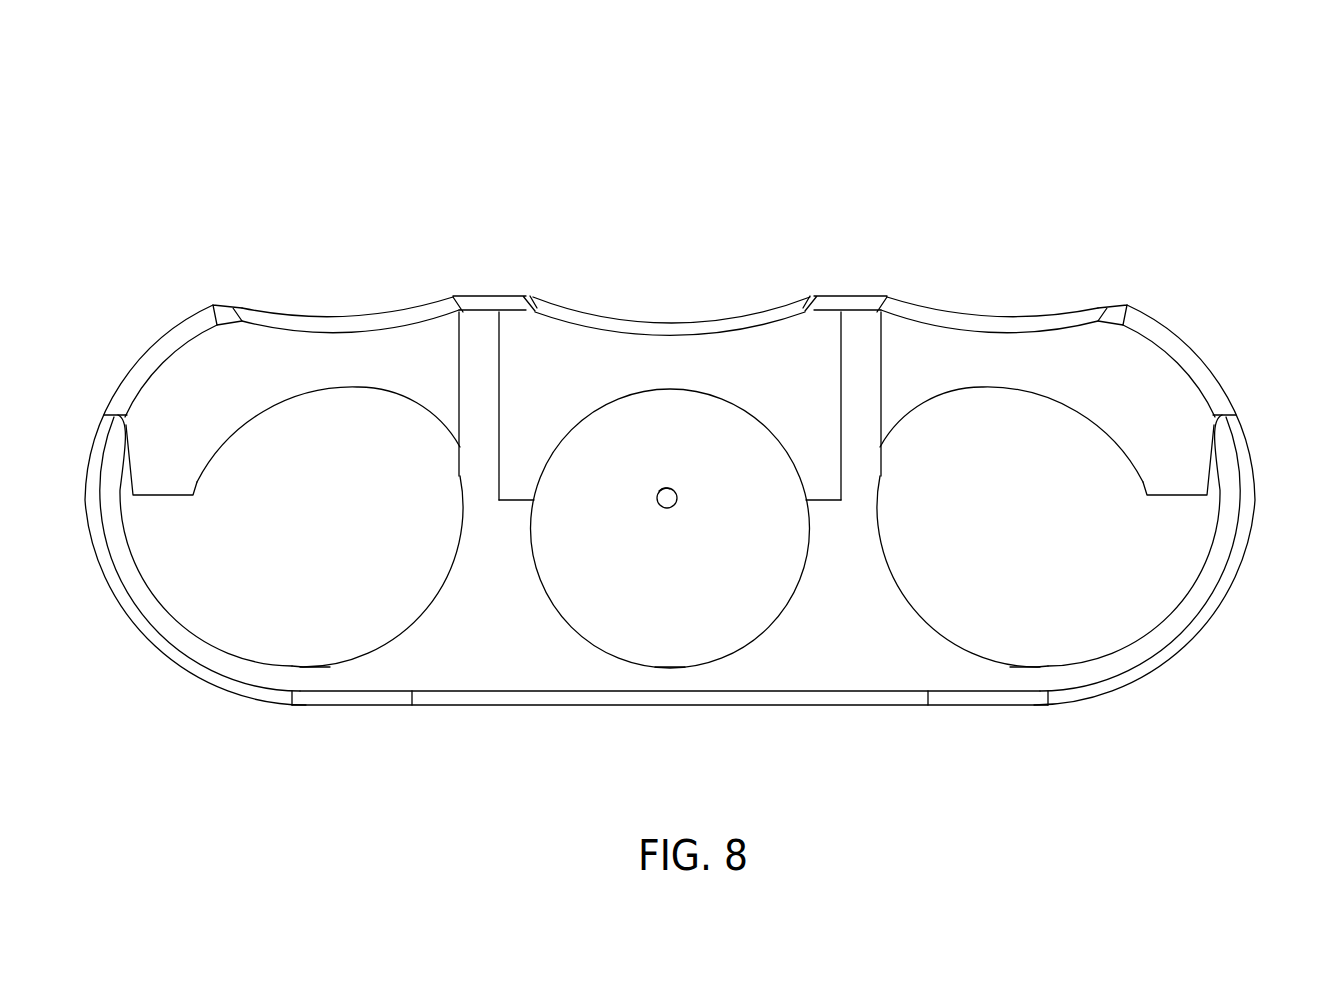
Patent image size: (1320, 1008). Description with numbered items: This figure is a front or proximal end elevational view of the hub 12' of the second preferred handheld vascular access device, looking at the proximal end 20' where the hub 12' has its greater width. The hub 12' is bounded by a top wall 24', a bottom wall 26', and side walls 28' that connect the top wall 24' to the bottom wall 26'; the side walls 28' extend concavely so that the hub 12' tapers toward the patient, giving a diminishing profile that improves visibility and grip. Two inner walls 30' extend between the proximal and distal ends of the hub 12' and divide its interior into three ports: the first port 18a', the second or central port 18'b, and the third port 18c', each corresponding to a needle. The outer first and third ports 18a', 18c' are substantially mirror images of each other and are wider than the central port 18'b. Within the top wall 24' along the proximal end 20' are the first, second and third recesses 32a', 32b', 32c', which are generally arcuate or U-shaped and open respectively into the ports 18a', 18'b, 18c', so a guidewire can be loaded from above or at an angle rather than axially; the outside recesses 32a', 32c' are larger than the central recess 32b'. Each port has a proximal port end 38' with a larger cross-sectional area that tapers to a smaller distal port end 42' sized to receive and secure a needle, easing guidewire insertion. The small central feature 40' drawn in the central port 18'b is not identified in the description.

The hub 12' is at (668, 412).
The first port 18a' is at (270, 527).
The second port 18'b is at (670, 508).
The third port 18c' is at (1045, 563).
The proximal end 20' is at (682, 505).
The top wall 24' is at (670, 273).
The bottom wall 26' is at (670, 731).
The side walls 28' is at (668, 553).
The inner wall 30' is at (667, 369).
The first recess 32a' is at (350, 308).
The second recess 32b' is at (671, 316).
The third recess 32c' is at (989, 298).
The proximal port end 38' is at (676, 721).
The pin 40' is at (659, 531).
The distal port end 42' is at (651, 461).